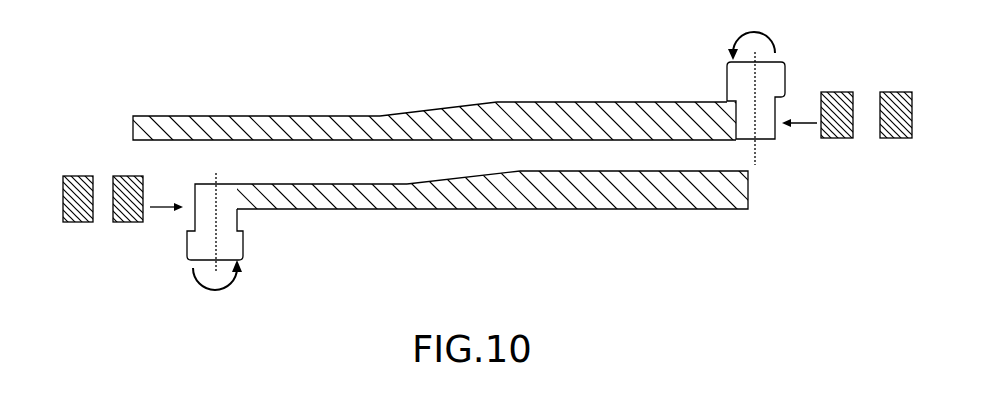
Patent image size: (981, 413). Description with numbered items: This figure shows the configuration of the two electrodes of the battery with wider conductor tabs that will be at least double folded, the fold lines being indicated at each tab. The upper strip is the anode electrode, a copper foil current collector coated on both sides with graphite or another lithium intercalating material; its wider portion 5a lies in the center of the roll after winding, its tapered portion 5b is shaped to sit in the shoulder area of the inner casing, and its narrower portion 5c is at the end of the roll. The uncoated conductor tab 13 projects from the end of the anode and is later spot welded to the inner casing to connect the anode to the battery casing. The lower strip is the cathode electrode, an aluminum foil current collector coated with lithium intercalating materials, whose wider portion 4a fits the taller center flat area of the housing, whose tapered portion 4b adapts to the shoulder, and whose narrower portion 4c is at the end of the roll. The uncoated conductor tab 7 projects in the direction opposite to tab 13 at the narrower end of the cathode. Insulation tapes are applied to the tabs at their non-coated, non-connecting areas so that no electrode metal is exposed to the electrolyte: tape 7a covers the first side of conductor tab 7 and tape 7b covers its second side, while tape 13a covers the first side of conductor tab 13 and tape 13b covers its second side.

The narrower end of anode electrode 5c is at (254, 98).
The tapered portion of anode electrode 5b is at (413, 97).
The wider portion of anode electrode 5a is at (632, 97).
The conductor tab 13 is at (720, 94).
The insulation tape 13a is at (819, 129).
The insulation tape 13b is at (897, 129).
The narrower end of cathode electrode 4c is at (322, 223).
The tapered portion of cathode electrode 4b is at (502, 223).
The wider portion of cathode electrode 4a is at (651, 223).
The conductor tab 7 is at (242, 233).
The insulation tape 7a is at (148, 212).
The insulation tape 7b is at (78, 212).